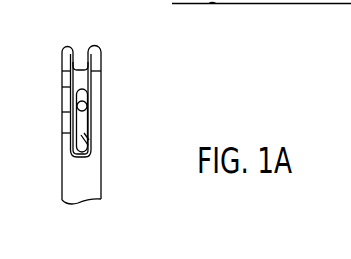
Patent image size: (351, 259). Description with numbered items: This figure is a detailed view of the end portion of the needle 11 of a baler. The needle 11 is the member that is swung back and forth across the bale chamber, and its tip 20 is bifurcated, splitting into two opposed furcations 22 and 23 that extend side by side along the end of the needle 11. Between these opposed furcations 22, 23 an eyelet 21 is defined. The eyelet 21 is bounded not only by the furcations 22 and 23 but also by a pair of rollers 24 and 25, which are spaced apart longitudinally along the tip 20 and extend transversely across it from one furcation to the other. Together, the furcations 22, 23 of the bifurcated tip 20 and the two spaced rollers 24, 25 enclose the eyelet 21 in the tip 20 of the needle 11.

The needle 11 is at (109, 186).
The tip 20 is at (56, 49).
The eyelet 21 is at (95, 102).
The furcation 22 is at (62, 111).
The furcation 23 is at (95, 112).
The roller 24 is at (92, 143).
The roller 25 is at (80, 68).